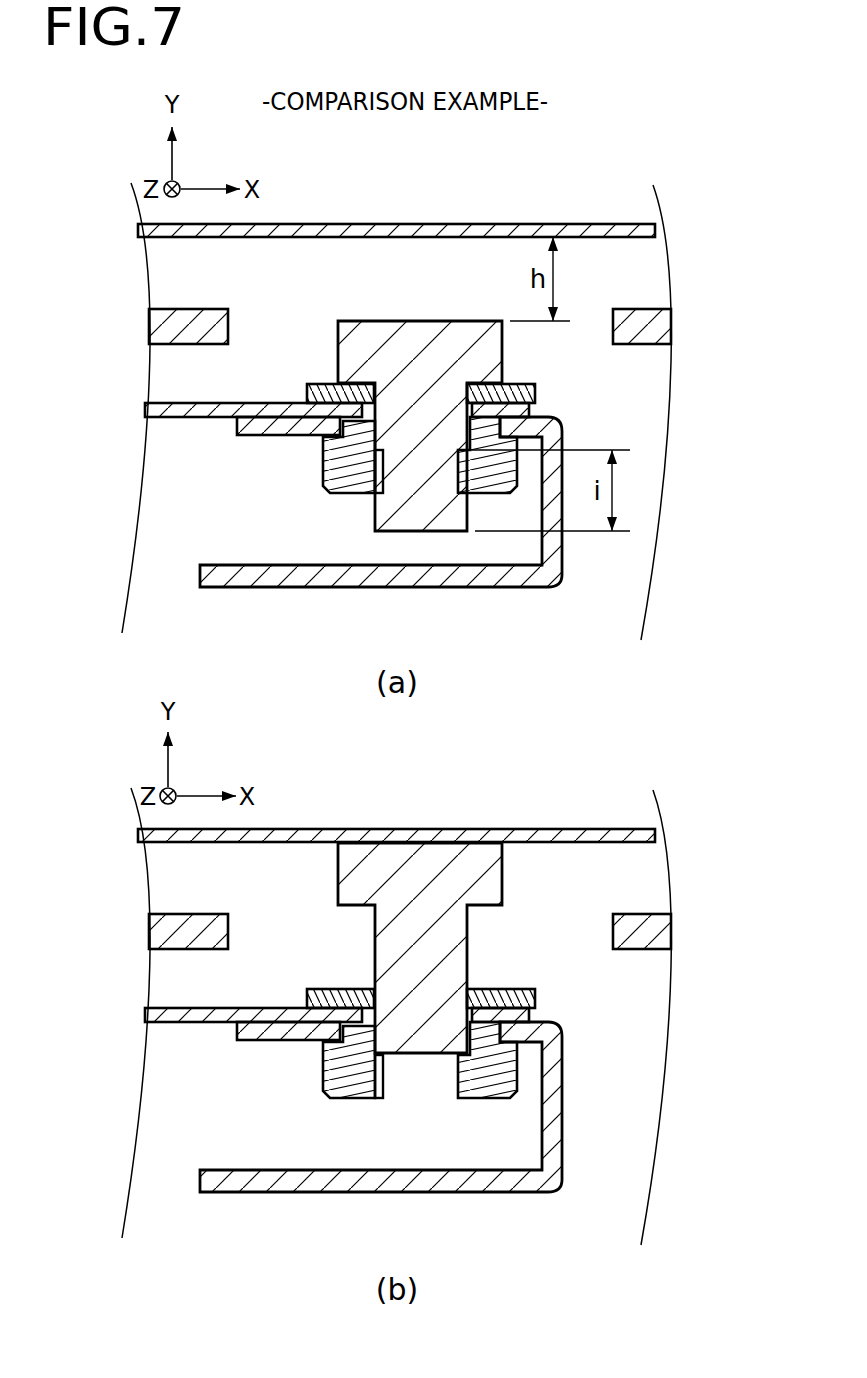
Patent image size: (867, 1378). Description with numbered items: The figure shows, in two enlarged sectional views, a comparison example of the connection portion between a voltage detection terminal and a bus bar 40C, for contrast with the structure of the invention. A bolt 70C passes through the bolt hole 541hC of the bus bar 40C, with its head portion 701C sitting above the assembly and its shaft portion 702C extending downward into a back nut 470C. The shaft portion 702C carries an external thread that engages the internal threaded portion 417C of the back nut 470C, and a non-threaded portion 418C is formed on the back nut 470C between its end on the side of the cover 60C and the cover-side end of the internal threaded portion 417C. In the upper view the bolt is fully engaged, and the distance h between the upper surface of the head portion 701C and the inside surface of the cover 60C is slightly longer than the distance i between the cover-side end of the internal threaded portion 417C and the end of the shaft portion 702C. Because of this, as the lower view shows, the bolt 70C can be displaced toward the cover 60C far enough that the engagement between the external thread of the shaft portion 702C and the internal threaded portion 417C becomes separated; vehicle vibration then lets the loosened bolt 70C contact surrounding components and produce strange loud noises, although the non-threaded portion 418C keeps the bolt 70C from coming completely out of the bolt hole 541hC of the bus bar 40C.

The cover 60C is at (523, 224).
The bolt 70C is at (520, 606).
The head portion 701C is at (397, 332).
The shaft portion 702C is at (385, 512).
The bolt hole 541hC is at (467, 407).
The non-threaded portion 418C is at (467, 435).
The back nut 470C is at (322, 495).
The internal threaded portion 417C is at (381, 475).
The bus bar 40C is at (550, 588).